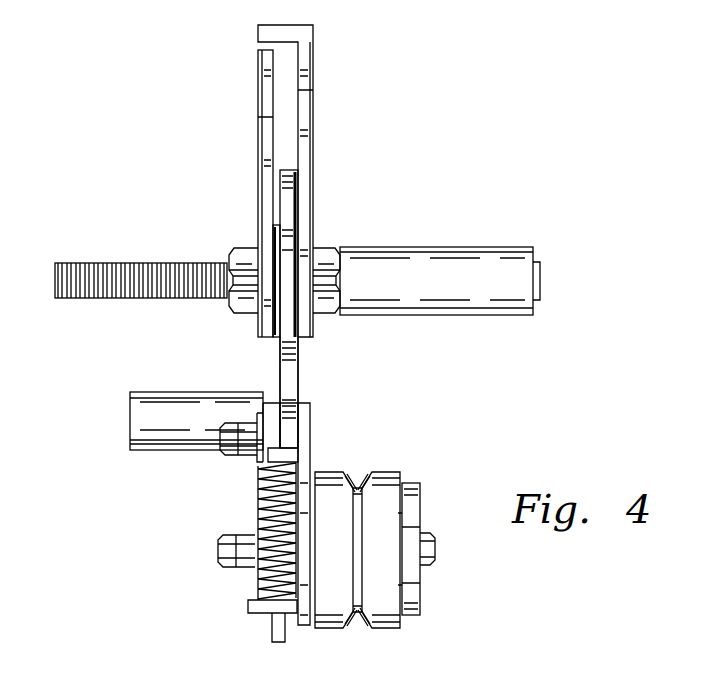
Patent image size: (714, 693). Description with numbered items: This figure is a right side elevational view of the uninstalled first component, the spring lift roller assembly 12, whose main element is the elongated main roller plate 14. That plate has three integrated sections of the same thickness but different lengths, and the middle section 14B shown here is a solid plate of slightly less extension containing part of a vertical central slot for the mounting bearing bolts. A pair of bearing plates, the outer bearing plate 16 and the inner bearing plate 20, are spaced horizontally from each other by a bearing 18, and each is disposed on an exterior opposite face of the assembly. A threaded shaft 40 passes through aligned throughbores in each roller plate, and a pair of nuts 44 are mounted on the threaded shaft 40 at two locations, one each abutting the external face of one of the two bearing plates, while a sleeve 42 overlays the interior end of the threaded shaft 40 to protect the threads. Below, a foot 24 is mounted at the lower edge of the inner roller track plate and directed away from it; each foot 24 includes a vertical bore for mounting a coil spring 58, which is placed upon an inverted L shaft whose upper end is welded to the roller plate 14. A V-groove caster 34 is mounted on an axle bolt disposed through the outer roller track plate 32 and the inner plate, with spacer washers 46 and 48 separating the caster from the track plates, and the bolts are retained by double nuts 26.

The spring lift roller assembly 12 is at (432, 180).
The main roller plate 14 is at (287, 170).
The middle section of main roller plate 14B is at (290, 392).
The outer bearing plate 16 is at (258, 93).
The bearing 18 is at (276, 338).
The inner bearing plate 20 is at (313, 97).
The foot 24 is at (268, 612).
The nuts 26 is at (232, 456).
The outer roller track plate 32 is at (423, 597).
The V-groove caster 34 is at (385, 472).
The threaded shaft 40 is at (87, 263).
The sleeve 42 is at (445, 290).
The nuts 44 is at (241, 248).
The spacer washer 46 is at (325, 523).
The washer 48 is at (422, 526).
The coil spring 58 is at (262, 500).